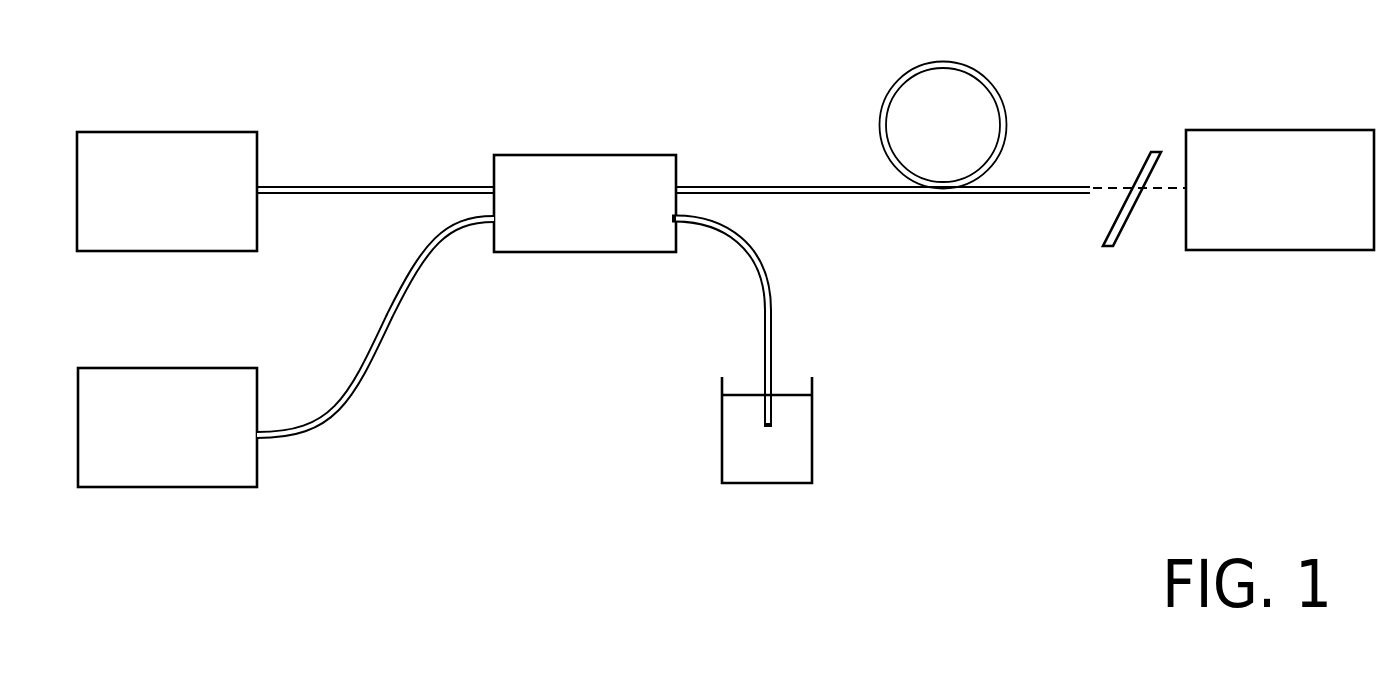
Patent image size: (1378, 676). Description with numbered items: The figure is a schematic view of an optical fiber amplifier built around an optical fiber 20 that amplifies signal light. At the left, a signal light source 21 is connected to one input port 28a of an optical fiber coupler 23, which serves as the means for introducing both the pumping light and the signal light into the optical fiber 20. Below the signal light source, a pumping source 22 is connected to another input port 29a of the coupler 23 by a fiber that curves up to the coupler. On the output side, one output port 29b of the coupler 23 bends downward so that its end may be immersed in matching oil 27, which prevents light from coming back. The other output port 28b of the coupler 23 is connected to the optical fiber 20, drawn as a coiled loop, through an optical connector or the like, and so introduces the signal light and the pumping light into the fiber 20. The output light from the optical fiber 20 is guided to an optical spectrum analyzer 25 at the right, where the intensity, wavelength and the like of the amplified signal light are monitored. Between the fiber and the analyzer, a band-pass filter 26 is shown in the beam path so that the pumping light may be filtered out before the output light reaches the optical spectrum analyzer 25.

The optical fiber 20 is at (1000, 105).
The signal light source 21 is at (147, 131).
The pumping source 22 is at (163, 487).
The optical fiber coupler 23 is at (540, 252).
The optical spectrum analyzer 25 is at (1293, 250).
The band-pass filter 26 is at (1130, 227).
The matching oil 27 is at (750, 483).
The input port 28a is at (337, 186).
The output port 28b is at (718, 185).
The input port 29a is at (357, 392).
The output port 29b is at (752, 277).